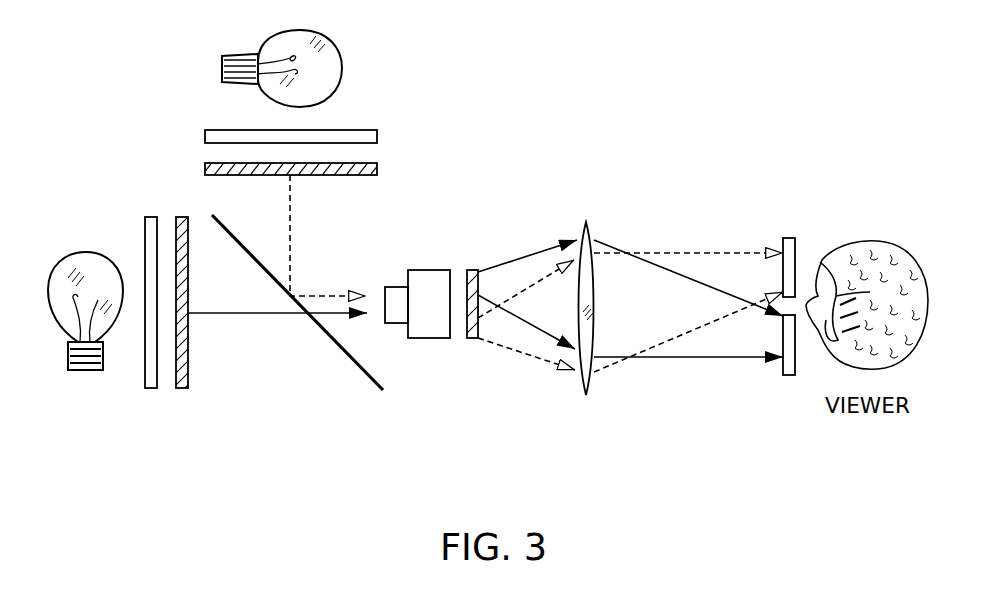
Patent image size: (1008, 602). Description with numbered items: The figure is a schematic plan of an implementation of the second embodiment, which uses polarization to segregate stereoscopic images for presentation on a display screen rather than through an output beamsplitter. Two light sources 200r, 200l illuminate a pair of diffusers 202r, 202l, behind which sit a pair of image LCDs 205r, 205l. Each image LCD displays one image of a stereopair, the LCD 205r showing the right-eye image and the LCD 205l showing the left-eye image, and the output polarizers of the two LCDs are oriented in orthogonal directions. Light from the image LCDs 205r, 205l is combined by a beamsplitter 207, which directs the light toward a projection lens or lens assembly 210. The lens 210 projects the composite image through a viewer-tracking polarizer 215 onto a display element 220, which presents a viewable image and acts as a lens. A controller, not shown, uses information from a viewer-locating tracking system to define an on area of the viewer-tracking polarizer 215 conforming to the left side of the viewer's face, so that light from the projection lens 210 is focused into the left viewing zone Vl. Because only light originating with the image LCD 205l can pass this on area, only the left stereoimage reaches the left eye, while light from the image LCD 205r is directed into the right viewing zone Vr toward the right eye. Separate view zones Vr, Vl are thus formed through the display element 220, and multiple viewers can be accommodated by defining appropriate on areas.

The light source 200r is at (342, 68).
The diffuser 202r is at (377, 137).
The image LCD 205r is at (377, 170).
The light source 200l is at (85, 370).
The diffuser 202l is at (151, 388).
The image LCD 205l is at (182, 388).
The beamsplitter 207 is at (370, 382).
The projection lens 210 is at (425, 270).
The viewer-tracking polarizer 215 is at (472, 338).
The display element 220 is at (584, 395).
The viewing zone Vr is at (790, 238).
The viewing zone Vl is at (790, 375).